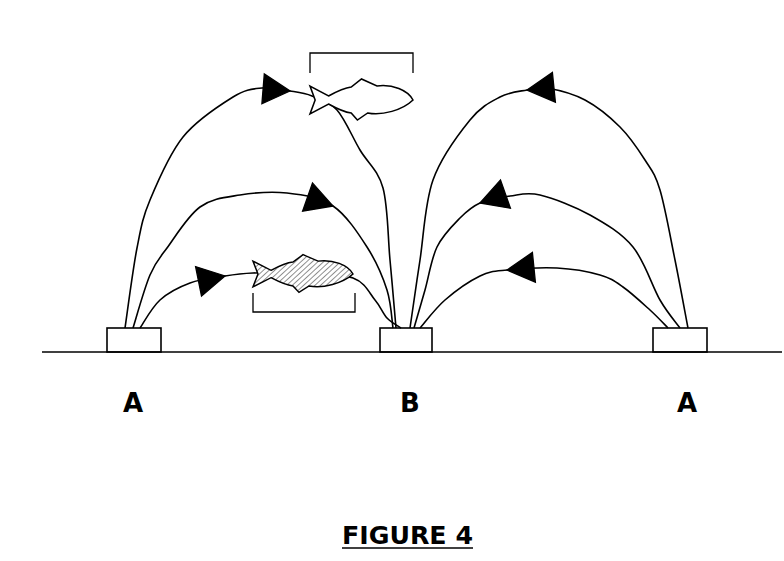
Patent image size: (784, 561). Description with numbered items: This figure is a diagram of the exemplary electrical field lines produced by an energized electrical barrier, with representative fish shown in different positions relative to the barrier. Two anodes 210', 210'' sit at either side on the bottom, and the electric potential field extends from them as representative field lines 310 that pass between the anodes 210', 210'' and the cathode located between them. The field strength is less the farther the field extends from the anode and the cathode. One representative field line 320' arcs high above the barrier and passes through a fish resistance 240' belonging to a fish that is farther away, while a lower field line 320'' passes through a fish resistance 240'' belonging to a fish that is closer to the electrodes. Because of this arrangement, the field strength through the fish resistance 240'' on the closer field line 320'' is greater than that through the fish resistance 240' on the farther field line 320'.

The anode 210' is at (718, 318).
The anode 210'' is at (87, 307).
The representative field lines 310 is at (618, 106).
The representative field line 320' is at (244, 184).
The field line 320'' is at (270, 270).
The fish resistance 240' is at (393, 63).
The fish resistance 240'' is at (283, 298).